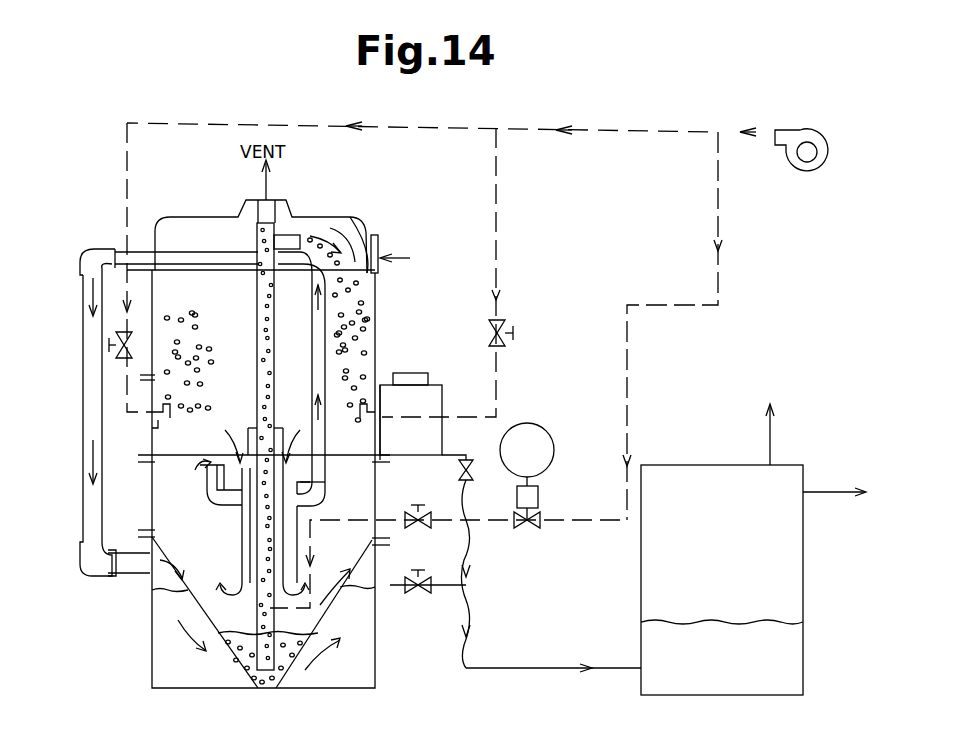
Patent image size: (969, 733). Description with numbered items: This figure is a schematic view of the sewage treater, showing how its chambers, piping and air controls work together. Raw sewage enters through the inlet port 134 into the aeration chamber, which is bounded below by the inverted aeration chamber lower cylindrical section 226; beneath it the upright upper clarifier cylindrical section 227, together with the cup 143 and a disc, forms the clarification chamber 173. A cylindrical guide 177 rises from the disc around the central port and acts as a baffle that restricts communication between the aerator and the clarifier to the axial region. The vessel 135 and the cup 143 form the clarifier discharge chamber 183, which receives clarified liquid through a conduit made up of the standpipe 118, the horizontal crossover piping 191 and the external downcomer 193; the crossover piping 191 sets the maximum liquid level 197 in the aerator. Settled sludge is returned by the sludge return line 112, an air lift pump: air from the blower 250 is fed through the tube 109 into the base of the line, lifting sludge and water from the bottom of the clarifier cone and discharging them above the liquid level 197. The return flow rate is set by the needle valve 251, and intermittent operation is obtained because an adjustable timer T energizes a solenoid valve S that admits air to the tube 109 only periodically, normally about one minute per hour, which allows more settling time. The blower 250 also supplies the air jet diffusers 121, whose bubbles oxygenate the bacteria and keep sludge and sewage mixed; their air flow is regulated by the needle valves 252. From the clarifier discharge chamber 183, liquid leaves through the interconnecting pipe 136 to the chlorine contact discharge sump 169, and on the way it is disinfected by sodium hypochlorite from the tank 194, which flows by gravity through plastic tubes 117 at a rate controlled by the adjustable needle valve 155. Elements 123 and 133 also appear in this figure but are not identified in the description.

The tube 109 is at (719, 225).
The sludge return line 112 is at (257, 330).
The plastic tubes 117 is at (467, 560).
The standpipe 118 is at (312, 314).
The air jet diffusers 121 is at (171, 414).
The air inlet fitting 123 is at (157, 426).
The treatment tank 133 is at (377, 306).
The inlet port 134 is at (380, 240).
The vessel 135 is at (375, 646).
The interconnecting pipe 136 is at (467, 595).
The cup 143 is at (190, 602).
The adjustable needle valve 155 is at (470, 477).
The chlorine contact discharge sump 169 is at (734, 533).
The clarification chamber 173 is at (214, 579).
The cylindrical guide 177 is at (243, 530).
The clarifier discharge chamber 183 is at (184, 676).
The horizontal crossover piping 191 is at (222, 252).
The downcomer 193 is at (84, 378).
The disinfectant tank 194 is at (442, 386).
The maximum liquid level 197 is at (354, 232).
The aeration chamber lower cylindrical section 226 is at (150, 457).
The upper clarifier cylindrical section 227 is at (152, 494).
The blower 250 is at (829, 150).
The needle valve 251 is at (440, 509).
The needle valves 252 is at (116, 338).
The adjustable timer T is at (540, 426).
The solenoid valve S is at (539, 497).